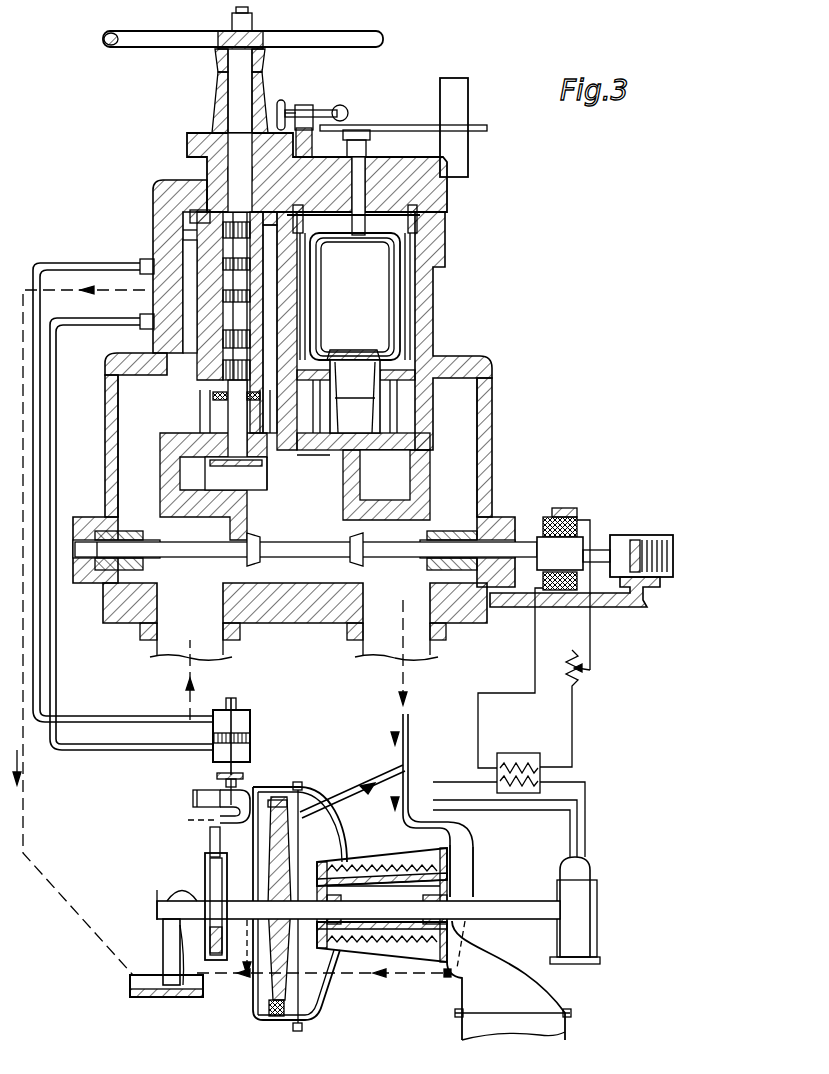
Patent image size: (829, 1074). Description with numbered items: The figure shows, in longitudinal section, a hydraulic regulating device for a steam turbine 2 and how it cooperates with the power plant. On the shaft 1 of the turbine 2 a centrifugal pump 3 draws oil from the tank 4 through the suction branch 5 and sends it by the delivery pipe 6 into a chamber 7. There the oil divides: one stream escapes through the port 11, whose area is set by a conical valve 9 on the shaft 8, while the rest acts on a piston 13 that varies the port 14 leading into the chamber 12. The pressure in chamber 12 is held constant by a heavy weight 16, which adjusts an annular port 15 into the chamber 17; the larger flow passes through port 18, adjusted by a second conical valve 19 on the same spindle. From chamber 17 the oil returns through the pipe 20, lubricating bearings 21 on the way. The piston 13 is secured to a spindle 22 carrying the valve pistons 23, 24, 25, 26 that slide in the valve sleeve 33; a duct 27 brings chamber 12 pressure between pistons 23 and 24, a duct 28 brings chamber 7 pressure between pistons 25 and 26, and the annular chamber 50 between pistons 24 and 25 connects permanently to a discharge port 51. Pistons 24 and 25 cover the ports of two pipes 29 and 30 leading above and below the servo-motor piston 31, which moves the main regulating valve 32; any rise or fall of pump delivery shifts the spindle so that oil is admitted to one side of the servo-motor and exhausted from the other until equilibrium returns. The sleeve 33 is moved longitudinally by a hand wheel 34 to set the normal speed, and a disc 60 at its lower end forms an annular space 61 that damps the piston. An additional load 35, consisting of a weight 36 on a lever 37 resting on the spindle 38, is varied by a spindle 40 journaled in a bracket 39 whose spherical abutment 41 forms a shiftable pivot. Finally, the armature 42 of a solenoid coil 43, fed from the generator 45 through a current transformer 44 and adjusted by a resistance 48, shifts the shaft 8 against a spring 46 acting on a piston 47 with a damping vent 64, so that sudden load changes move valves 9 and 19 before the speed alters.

The shaft 1 is at (509, 1017).
The turbine 2 is at (338, 838).
The centrifugal pump 3 is at (220, 960).
The tank 4 is at (148, 985).
The suction branch 5 is at (172, 941).
The delivery pipe 6 is at (203, 843).
The chamber 7 is at (137, 496).
The shaft 8 is at (170, 552).
The conical valve 9 is at (260, 557).
The port 11 is at (253, 537).
The chamber 12 is at (312, 499).
The piston 13 is at (257, 460).
The port 14 is at (268, 458).
The annular port 15 is at (378, 436).
The weight 16 is at (396, 296).
The chamber 17 is at (456, 493).
The port 18 is at (364, 541).
The conical valve 19 is at (374, 567).
The pipe 20 is at (447, 650).
The bearings 21 is at (470, 893).
The spindle 22 is at (268, 400).
The valve piston 23 is at (233, 372).
The valve piston 24 is at (188, 338).
The valve piston 25 is at (157, 291).
The valve piston 26 is at (195, 230).
The duct 27 is at (305, 452).
The duct 28 is at (160, 316).
The pipe 29 is at (63, 265).
The pipe 30 is at (57, 692).
The servo-motor piston 31 is at (250, 737).
The main regulating valve 32 is at (250, 780).
The valve sleeve 33 is at (190, 212).
The hand wheel 34 is at (355, 36).
The additional load 35 is at (397, 125).
The weight 36 is at (466, 110).
The lever 37 is at (487, 128).
The spindle 38 is at (370, 178).
The bracket 39 is at (305, 128).
The spindle 40 is at (283, 112).
The spherical abutment 41 is at (343, 108).
The armature 42 is at (572, 552).
The solenoid coil 43 is at (567, 519).
The current transformer 44 is at (524, 757).
The generator 45 is at (584, 872).
The spring 46 is at (665, 539).
The piston 47 is at (633, 538).
The resistance 48 is at (580, 678).
The annular chamber 50 is at (326, 307).
The discharge port 51 is at (322, 275).
The disc 60 is at (228, 400).
The annular space 61 is at (207, 403).
The vent 64 is at (670, 537).